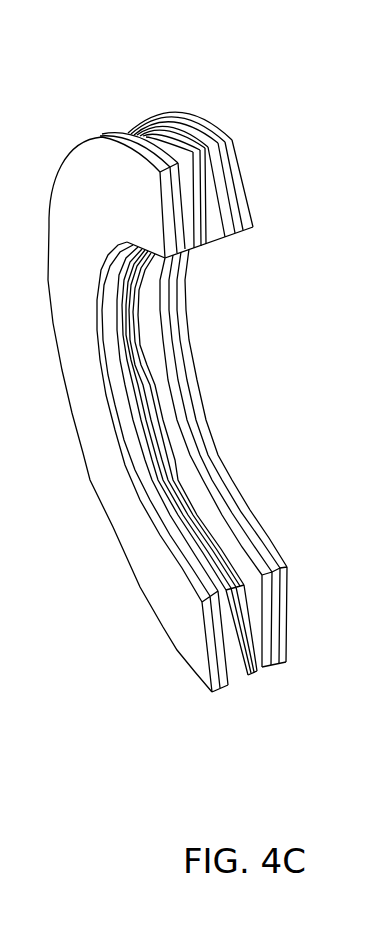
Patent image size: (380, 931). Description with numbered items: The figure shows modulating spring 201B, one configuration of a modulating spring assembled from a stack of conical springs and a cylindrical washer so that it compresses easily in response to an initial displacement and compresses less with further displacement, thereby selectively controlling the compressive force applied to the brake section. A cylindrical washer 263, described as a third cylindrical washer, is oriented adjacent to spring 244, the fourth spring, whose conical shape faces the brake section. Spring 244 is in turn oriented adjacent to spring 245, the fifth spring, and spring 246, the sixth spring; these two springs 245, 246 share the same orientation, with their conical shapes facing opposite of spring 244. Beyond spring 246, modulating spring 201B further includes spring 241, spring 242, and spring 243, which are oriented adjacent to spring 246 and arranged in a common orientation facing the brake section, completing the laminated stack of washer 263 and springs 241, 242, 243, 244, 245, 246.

The modulating spring 201B is at (212, 77).
The cylindrical washer 263 is at (177, 650).
The spring 241 is at (223, 510).
The spring 242 is at (240, 522).
The spring 243 is at (260, 538).
The spring 244 is at (223, 690).
The spring 245 is at (250, 678).
The spring 246 is at (263, 670).